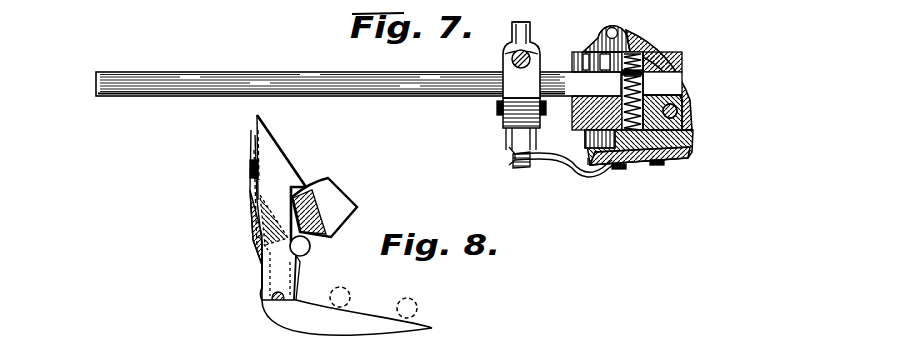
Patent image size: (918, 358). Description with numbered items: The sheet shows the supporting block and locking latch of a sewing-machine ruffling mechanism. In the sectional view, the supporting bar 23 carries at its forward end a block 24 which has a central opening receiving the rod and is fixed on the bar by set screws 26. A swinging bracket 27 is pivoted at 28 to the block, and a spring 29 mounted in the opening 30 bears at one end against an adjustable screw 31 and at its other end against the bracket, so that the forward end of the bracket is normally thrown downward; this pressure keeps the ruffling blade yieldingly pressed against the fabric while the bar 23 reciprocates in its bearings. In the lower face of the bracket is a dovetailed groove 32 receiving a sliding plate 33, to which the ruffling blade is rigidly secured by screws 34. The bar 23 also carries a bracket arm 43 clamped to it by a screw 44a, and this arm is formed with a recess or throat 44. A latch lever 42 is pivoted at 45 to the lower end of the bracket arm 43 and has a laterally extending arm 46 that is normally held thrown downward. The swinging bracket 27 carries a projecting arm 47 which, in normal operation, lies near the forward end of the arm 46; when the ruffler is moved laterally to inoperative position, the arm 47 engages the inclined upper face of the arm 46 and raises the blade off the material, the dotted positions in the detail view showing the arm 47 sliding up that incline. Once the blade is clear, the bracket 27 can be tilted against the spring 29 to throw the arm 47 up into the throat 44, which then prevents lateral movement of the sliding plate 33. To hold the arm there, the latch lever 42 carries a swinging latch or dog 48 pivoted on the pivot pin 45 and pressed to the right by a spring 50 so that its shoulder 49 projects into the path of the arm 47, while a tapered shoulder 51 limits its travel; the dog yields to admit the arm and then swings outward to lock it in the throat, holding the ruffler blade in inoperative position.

In FIG. 7, the supporting bar 23 is at (370, 97).
In FIG. 7, the block 24 is at (668, 68).
In FIG. 7, the set screws 26 is at (596, 48).
In FIG. 7, the swinging bracket 27 is at (636, 50).
In FIG. 7, the pivot 28 is at (692, 114).
In FIG. 7, the spring 29 is at (660, 92).
In FIG. 7, the opening 30 is at (690, 102).
In FIG. 7, the adjustable screw 31 is at (645, 52).
In FIG. 7, the dovetailed groove 32 is at (596, 163).
In FIG. 7, the sliding plate 33 is at (668, 162).
In FIG. 7, the screws 34 is at (655, 165).
In FIG. 7, the latch lever 42 is at (521, 20).
In FIG. 8, the latch lever 42 is at (286, 178).
In FIG. 7, the bracket arm 43 is at (510, 117).
In FIG. 8, the bracket arm 43 is at (340, 208).
In FIG. 8, the throat 44 is at (312, 242).
In FIG. 7, the screw 44a is at (504, 58).
In FIG. 8, the pivot pin 45 is at (272, 304).
In FIG. 7, the laterally extending arm 46 is at (520, 168).
In FIG. 8, the laterally extending arm 46 is at (374, 326).
In FIG. 7, the projecting arm 47 is at (552, 160).
In FIG. 8, the projecting arm 47 is at (403, 298).
In FIG. 8, the latch or dog 48 is at (276, 270).
In FIG. 8, the shoulder 49 is at (304, 262).
In FIG. 8, the spring 50 is at (248, 215).
In FIG. 8, the tapered shoulder 51 is at (262, 246).